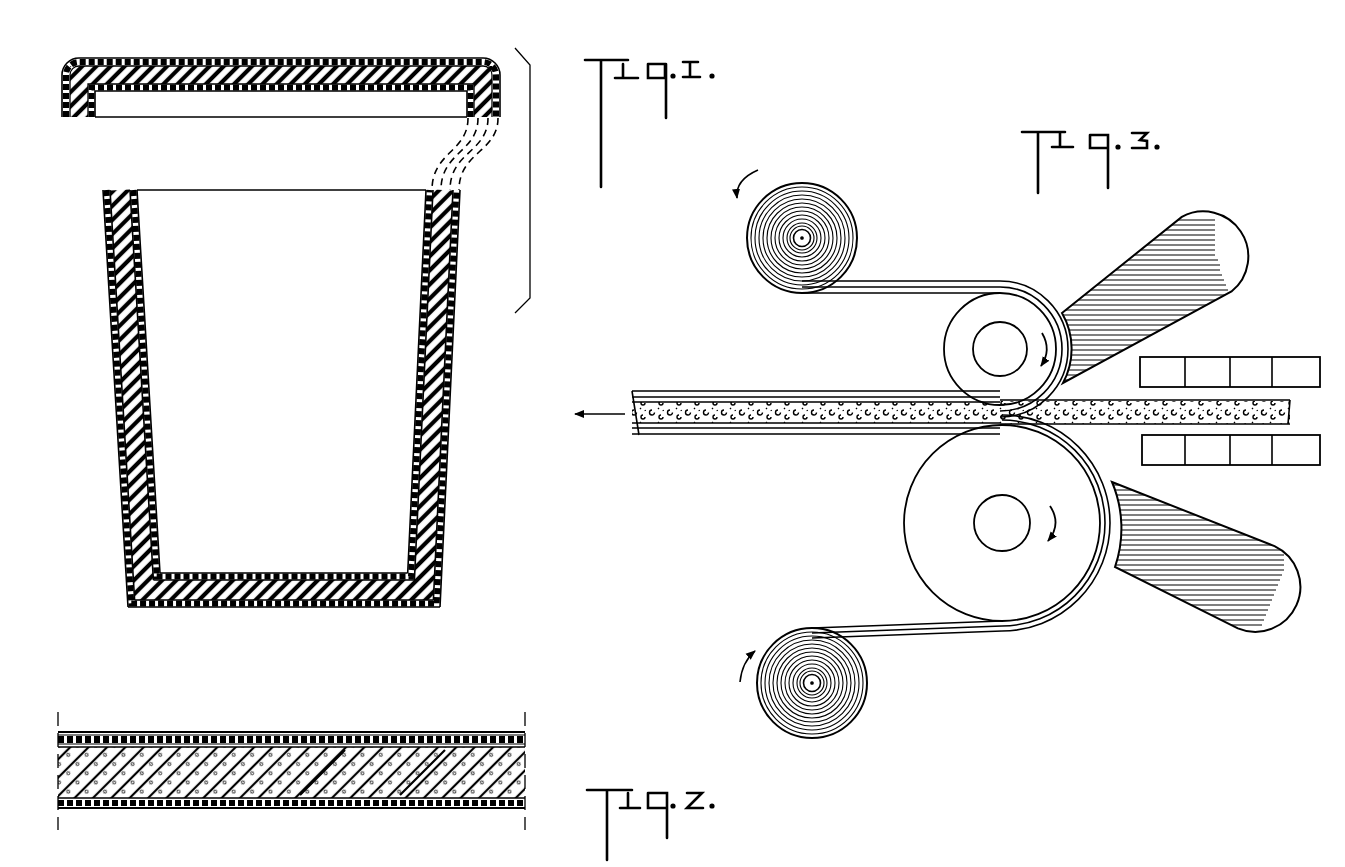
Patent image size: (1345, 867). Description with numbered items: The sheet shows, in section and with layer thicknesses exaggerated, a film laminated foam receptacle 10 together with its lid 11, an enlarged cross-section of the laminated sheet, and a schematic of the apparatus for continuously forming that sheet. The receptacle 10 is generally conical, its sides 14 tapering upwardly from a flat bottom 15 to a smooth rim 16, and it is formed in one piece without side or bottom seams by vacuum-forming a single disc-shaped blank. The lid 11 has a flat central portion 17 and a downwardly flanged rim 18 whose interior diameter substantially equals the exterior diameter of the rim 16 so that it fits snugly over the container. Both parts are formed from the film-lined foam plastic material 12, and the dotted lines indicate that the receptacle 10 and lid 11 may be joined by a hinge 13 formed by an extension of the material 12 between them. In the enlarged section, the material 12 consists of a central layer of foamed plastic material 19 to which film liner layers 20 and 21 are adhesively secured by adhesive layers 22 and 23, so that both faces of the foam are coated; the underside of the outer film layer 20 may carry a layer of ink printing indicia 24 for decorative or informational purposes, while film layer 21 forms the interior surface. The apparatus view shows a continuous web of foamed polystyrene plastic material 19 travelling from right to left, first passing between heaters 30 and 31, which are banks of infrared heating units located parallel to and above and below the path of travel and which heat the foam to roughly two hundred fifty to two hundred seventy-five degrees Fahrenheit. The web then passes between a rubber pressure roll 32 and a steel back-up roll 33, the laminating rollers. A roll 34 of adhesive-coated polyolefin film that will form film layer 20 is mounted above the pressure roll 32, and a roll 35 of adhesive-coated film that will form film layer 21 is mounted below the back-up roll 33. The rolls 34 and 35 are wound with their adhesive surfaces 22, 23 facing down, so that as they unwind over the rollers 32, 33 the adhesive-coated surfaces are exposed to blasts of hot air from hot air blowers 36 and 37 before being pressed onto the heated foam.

In FIG. 1, the receptacle 10 is at (452, 430).
In FIG. 1, the lid 11 is at (341, 56).
In FIG. 1, the film-lined foam plastic material 12 is at (455, 372).
In FIG. 2, the film-lined foam plastic material 12 is at (321, 766).
In FIG. 3, the film-lined foam plastic material 12 is at (684, 390).
In FIG. 1, the hinge 13 is at (440, 150).
In FIG. 1, the sides 14 is at (108, 357).
In FIG. 1, the bottom 15 is at (285, 575).
In FIG. 1, the rim 16 is at (128, 190).
In FIG. 1, the flat central portion 17 is at (207, 60).
In FIG. 1, the flanged rim 18 is at (80, 120).
In FIG. 2, the foamed plastic material 19 is at (322, 745).
In FIG. 3, the foamed plastic material 19 is at (1100, 423).
In FIG. 2, the film liner layer 20 is at (108, 732).
In FIG. 2, the film liner layer 21 is at (98, 808).
In FIG. 2, the adhesive layer 22 is at (526, 742).
In FIG. 3, the adhesive layer 22 is at (898, 282).
In FIG. 2, the adhesive layer 23 is at (526, 797).
In FIG. 3, the adhesive layer 23 is at (900, 636).
In FIG. 2, the ink printing indicia 24 is at (412, 750).
In FIG. 3, the heater 30 is at (1216, 358).
In FIG. 3, the heater 31 is at (1216, 456).
In FIG. 3, the rubber pressure roll 32 is at (946, 347).
In FIG. 3, the steel back-up roll 33 is at (908, 522).
In FIG. 3, the roll of adhesive-coated film 34 is at (762, 258).
In FIG. 3, the roll of adhesive-coated film 35 is at (790, 640).
In FIG. 3, the hot air blower 36 is at (1130, 262).
In FIG. 3, the hot air blower 37 is at (1178, 590).